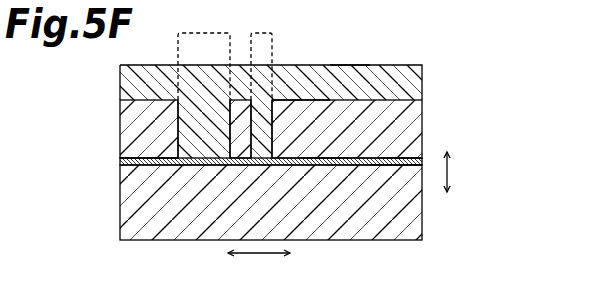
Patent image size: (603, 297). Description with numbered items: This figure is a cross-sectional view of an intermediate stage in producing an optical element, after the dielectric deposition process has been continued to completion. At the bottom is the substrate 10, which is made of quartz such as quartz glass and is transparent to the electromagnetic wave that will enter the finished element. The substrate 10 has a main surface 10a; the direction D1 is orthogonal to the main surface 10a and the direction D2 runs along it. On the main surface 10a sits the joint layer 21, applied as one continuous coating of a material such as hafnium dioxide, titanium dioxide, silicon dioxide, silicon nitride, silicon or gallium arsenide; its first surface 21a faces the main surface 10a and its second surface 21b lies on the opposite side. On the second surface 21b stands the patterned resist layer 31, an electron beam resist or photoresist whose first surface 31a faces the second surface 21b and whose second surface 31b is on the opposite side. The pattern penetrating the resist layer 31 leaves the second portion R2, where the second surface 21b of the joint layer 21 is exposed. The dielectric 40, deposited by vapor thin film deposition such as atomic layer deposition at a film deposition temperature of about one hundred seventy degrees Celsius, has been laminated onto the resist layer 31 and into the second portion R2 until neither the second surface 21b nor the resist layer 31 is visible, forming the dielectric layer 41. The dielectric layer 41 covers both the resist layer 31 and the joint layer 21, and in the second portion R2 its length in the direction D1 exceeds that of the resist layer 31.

The substrate 10 is at (410, 210).
The main surface 10a is at (147, 157).
The joint layer 21 is at (120, 161).
The first surface 21a is at (395, 166).
The second surface 21b is at (402, 158).
The resist layer 31 is at (410, 132).
The first surface 31a is at (326, 159).
The second surface 31b is at (302, 100).
The dielectric 40 is at (410, 84).
The dielectric layer 41 is at (354, 72).
The second portion R2 is at (227, 50).
The direction D1 is at (466, 172).
The direction D2 is at (259, 271).